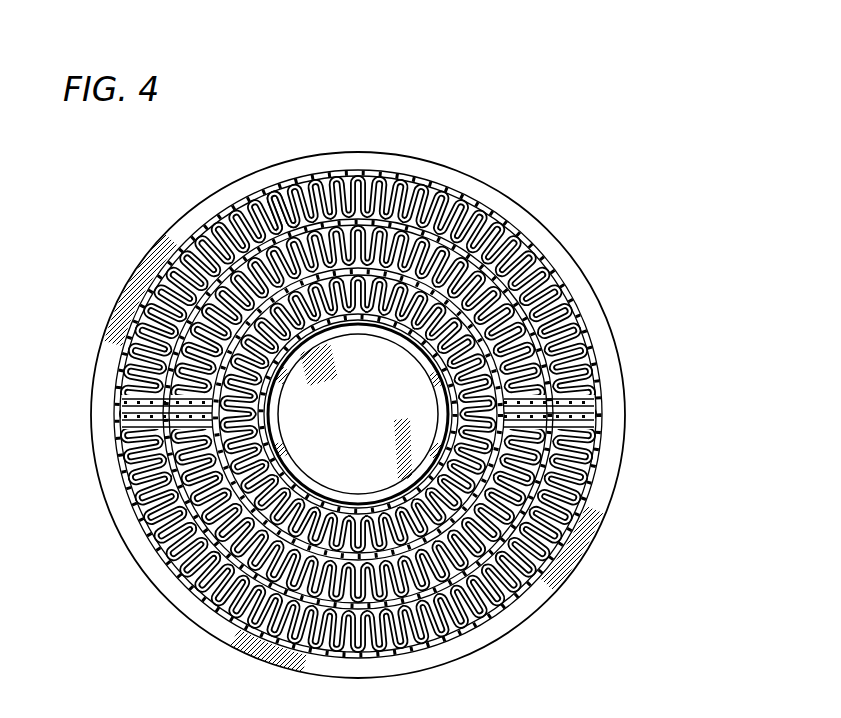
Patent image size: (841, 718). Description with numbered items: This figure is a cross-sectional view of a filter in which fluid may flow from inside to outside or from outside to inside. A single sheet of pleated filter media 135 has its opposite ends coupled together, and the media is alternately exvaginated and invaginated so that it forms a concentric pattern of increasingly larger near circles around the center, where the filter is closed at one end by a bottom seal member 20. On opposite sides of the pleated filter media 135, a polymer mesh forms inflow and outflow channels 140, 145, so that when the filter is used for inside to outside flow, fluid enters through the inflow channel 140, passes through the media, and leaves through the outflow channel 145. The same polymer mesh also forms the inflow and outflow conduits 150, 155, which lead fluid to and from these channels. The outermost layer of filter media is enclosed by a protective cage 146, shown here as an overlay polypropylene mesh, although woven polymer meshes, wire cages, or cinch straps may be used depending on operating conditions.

The bottom seal member 20 is at (453, 166).
The pleated filter media 135 is at (578, 313).
The inflow channel 140 is at (436, 312).
The outflow channel 145 is at (470, 212).
The protective cage 146 is at (263, 186).
The inflow conduit 150 is at (594, 395).
The outflow conduit 155 is at (114, 399).